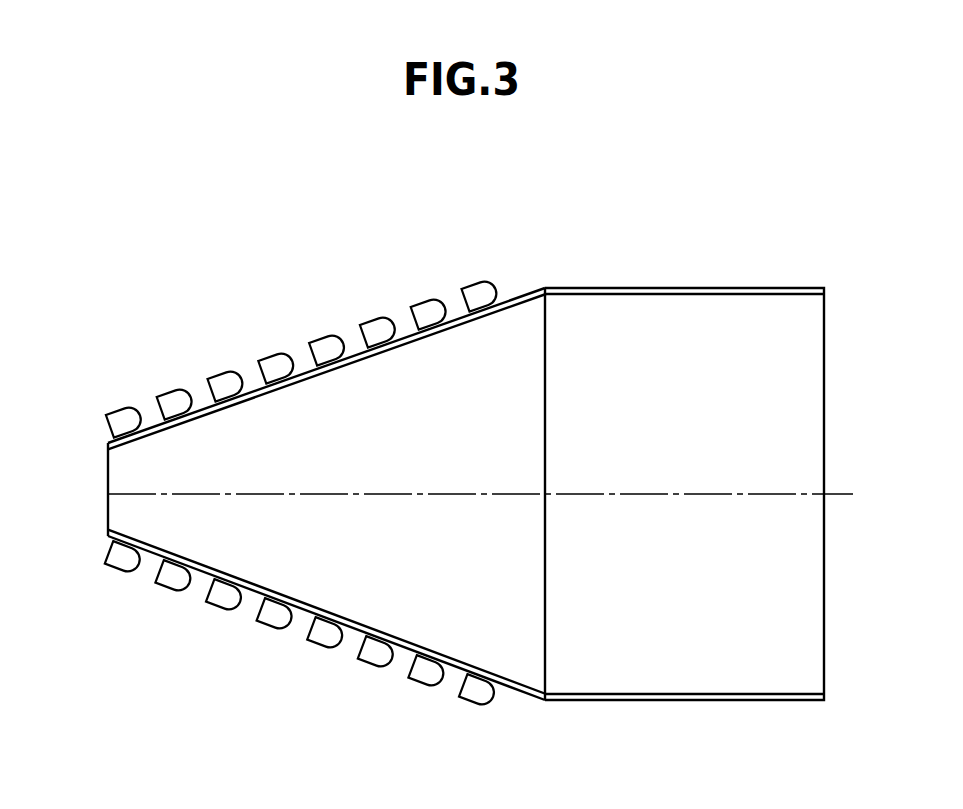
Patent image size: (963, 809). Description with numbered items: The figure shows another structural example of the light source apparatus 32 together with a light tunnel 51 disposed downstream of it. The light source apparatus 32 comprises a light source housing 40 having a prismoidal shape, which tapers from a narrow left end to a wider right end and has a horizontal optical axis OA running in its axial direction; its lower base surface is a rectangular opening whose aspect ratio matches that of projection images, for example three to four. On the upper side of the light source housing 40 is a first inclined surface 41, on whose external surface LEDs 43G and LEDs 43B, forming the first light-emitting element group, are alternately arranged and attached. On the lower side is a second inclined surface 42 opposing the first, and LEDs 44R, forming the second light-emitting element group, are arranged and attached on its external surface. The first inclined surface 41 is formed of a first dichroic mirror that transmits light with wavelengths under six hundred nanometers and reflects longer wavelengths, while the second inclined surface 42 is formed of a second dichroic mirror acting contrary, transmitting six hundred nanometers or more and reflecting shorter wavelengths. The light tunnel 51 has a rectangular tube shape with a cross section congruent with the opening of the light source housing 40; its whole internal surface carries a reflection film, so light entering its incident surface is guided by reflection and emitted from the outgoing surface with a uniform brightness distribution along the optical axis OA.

The light source apparatus 32 is at (263, 308).
The light source housing 40 is at (338, 568).
The first inclined surface 41 is at (523, 295).
The second inclined surface 42 is at (513, 692).
The LEDs 43G is at (107, 416).
The LEDs 43B is at (157, 397).
The LEDs 44R is at (155, 583).
The light tunnel 51 is at (748, 310).
The optical axis OA is at (502, 495).